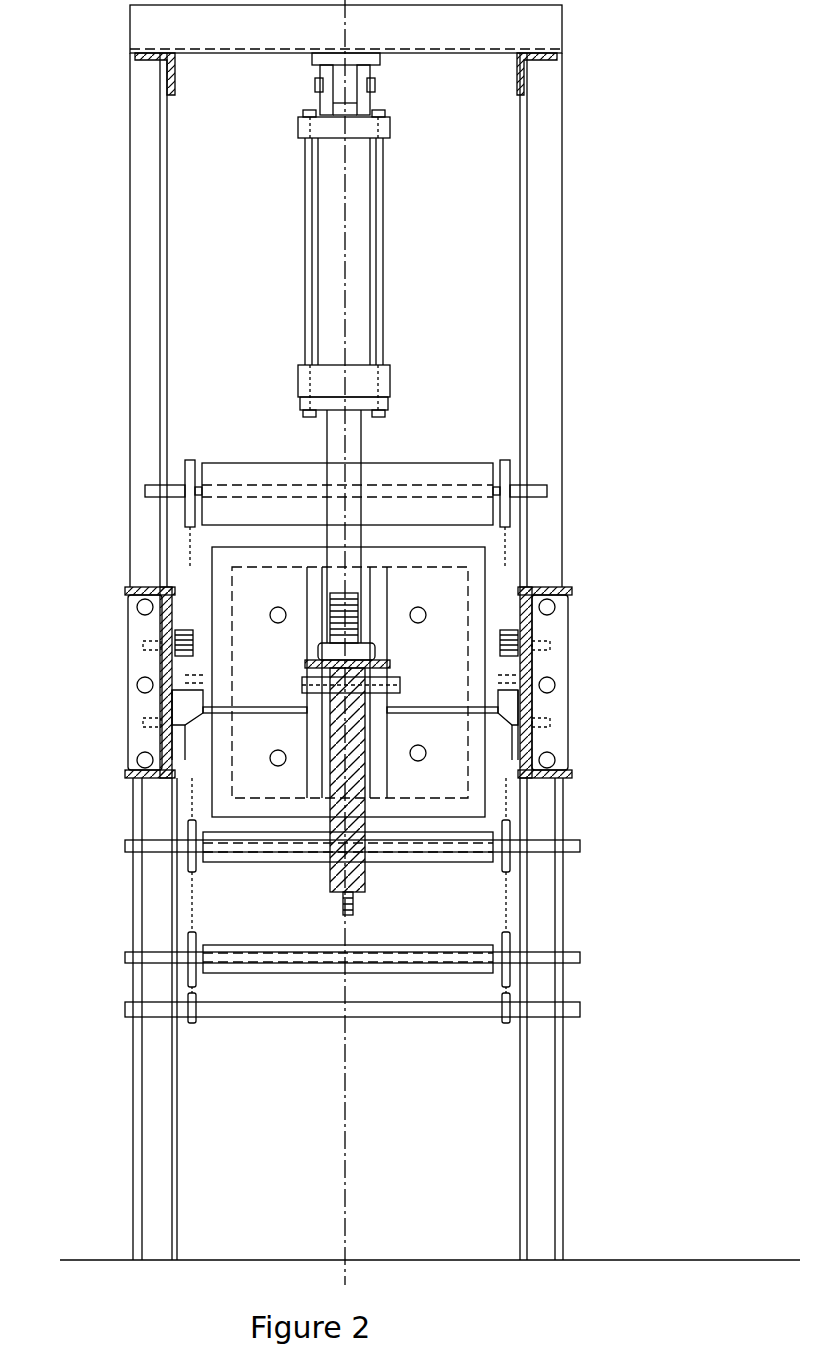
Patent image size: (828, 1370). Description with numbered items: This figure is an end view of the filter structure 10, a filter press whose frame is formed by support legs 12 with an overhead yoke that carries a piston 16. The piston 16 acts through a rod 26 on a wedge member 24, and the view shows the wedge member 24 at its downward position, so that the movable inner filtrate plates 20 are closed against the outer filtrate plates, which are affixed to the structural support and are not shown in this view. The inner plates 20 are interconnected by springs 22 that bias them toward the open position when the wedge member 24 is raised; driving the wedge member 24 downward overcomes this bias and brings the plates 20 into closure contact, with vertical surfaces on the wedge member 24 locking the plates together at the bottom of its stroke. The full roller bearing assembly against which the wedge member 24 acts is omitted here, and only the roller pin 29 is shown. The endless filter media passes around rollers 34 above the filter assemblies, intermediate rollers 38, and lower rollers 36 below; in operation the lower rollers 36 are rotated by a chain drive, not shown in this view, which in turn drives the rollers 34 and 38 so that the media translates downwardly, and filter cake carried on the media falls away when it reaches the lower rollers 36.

The filter structure 10 is at (645, 250).
The support legs 12 is at (135, 1105).
The piston 16 is at (385, 230).
The movable inner filtrate plates 20 is at (277, 672).
The springs 22 is at (280, 607).
The wedge member 24 is at (365, 868).
The rod 26 is at (358, 447).
The roller pin 29 is at (400, 683).
The rollers 34 is at (547, 492).
The lower rollers 36 is at (580, 960).
The intermediate rollers 38 is at (580, 846).